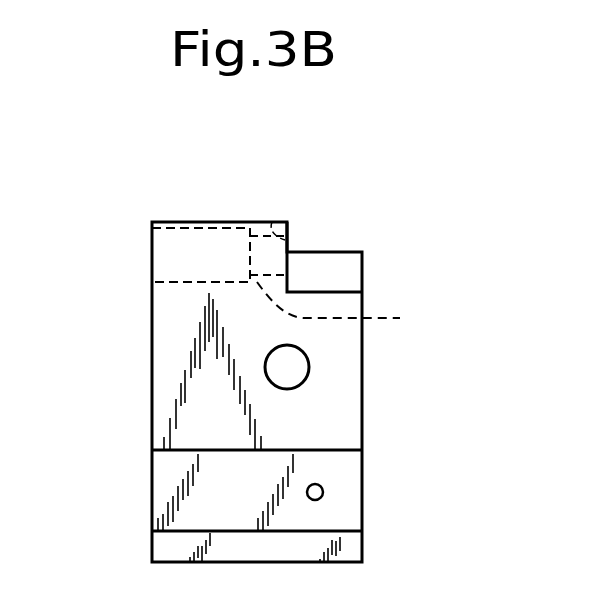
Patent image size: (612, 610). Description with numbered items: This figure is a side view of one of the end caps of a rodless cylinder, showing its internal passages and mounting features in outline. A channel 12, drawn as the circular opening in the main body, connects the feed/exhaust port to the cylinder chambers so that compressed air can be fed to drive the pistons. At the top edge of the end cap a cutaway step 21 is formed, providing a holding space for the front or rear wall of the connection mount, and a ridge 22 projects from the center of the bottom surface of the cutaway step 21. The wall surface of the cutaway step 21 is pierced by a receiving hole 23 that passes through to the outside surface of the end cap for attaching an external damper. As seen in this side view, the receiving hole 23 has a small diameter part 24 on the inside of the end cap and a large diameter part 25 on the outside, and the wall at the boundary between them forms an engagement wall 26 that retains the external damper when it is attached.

The channel 12 is at (290, 368).
The cutaway step 21 is at (343, 272).
The ridge 22 is at (326, 252).
The receiving hole 23 is at (152, 262).
The small diameter part 24 is at (272, 222).
The large diameter part 25 is at (190, 250).
The engagement wall 26 is at (260, 240).